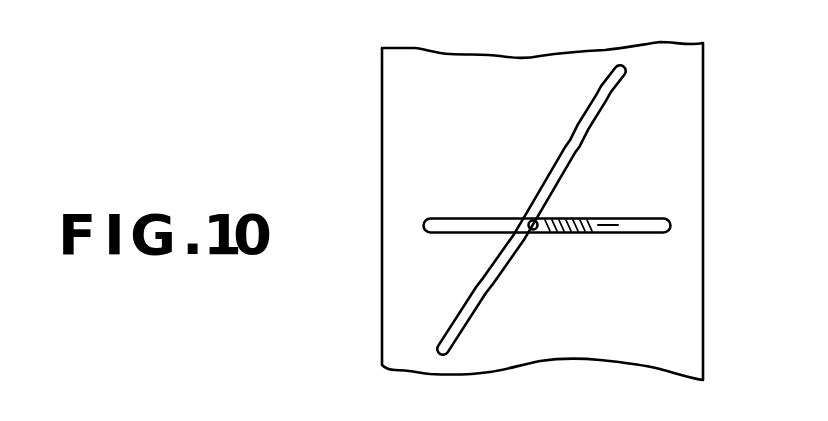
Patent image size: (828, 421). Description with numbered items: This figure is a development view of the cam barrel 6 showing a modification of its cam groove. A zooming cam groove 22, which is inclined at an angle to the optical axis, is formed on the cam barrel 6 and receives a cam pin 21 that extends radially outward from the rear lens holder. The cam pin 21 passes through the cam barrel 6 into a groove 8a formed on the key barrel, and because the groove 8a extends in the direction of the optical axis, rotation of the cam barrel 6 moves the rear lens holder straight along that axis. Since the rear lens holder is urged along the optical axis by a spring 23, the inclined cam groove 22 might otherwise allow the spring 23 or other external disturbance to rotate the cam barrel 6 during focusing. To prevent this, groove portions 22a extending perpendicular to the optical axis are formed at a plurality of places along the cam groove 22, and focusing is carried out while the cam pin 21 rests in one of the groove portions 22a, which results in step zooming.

The cam barrel 6 is at (688, 343).
The groove 8a is at (644, 218).
The cam pin 21 is at (513, 217).
The zooming cam groove 22 is at (508, 269).
The groove portion 22a is at (606, 94).
The spring 23 is at (595, 234).